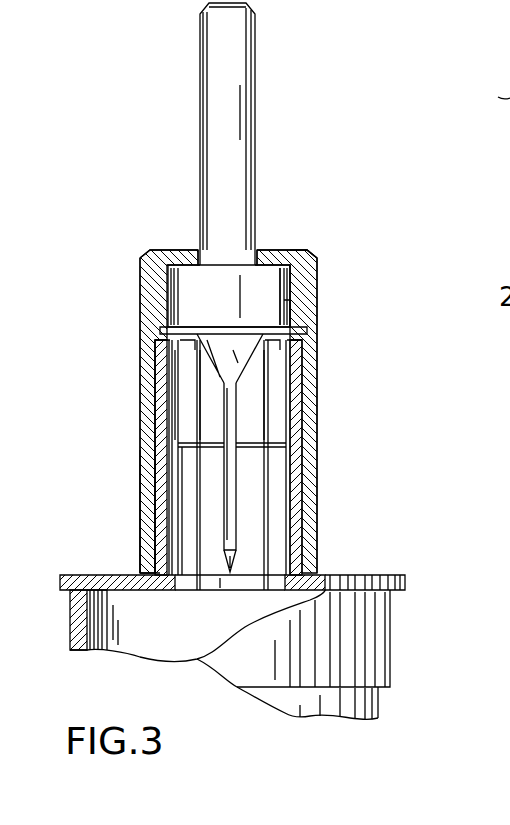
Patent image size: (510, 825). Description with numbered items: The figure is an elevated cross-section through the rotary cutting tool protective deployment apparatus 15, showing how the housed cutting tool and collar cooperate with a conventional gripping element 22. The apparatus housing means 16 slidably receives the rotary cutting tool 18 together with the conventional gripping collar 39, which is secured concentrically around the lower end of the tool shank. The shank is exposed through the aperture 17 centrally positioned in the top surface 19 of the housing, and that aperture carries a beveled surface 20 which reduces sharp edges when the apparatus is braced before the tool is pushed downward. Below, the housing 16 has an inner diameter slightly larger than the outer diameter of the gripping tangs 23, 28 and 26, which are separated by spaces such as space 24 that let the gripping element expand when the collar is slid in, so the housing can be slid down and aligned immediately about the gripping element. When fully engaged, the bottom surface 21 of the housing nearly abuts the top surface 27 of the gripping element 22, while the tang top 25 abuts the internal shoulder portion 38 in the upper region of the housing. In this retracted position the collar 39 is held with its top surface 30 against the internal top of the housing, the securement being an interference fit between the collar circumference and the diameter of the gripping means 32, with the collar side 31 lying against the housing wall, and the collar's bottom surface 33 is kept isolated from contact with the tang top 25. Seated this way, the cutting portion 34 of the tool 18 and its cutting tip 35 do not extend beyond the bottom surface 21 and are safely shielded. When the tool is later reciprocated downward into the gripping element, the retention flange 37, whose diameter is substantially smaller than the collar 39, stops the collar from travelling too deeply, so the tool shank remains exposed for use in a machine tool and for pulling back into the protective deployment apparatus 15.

The rotary cutting tool protective deployment apparatus 15 is at (333, 252).
The apparatus housing means 16 is at (316, 452).
The aperture 17 is at (200, 248).
The rotary cutting tool 18 is at (208, 66).
The top surface 19 is at (262, 248).
The beveled surface 20 is at (152, 250).
The bottom surface 21 is at (150, 573).
The gripping element 22 is at (372, 560).
The gripping tang 23 is at (178, 420).
The space 24 is at (178, 525).
The tang top 25 is at (156, 336).
The gripping tang 26 is at (287, 400).
The top surface 27 is at (337, 577).
The gripping tang 28 is at (265, 372).
The top surface 30 is at (296, 250).
The piston head side 31 is at (290, 285).
The gripping means 32 is at (290, 313).
The bottom surface 33 is at (290, 356).
The cutting portion 34 is at (237, 498).
The cutting tip 35 is at (230, 576).
The retention flange 37 is at (155, 462).
The internal shoulder portion 38 is at (160, 354).
The gripping collar 39 is at (176, 291).